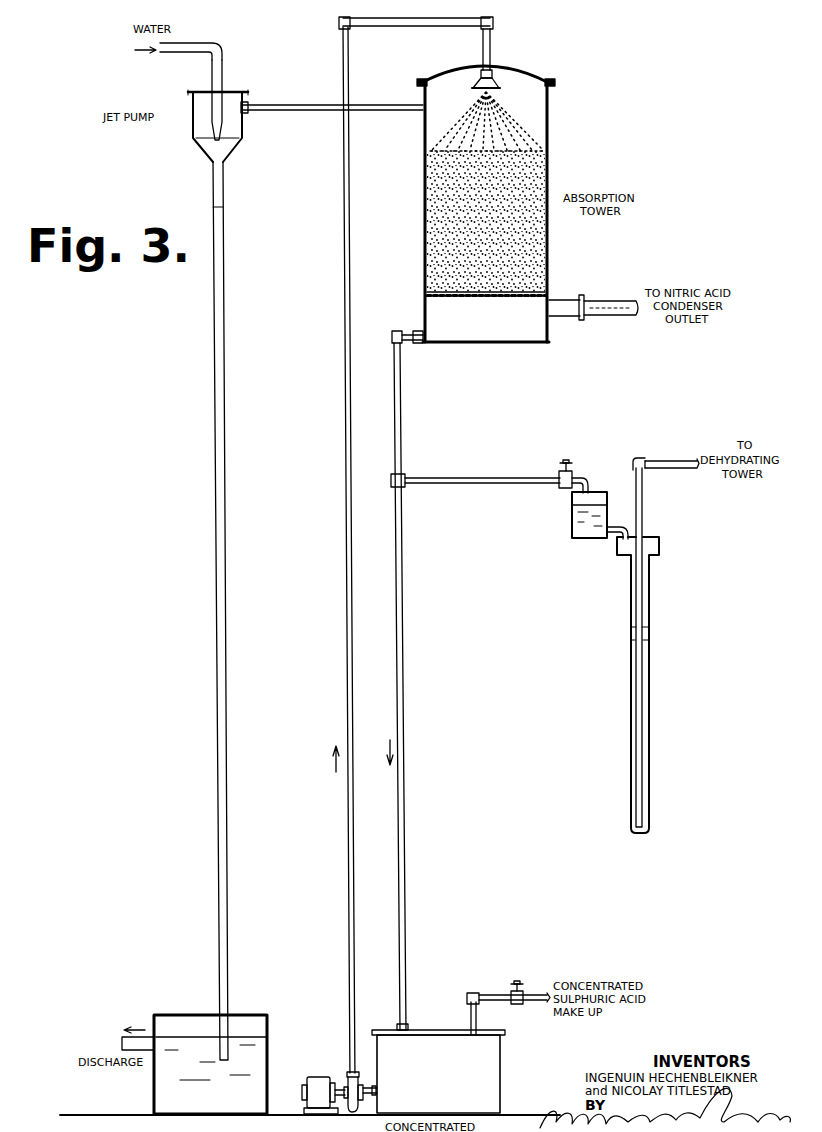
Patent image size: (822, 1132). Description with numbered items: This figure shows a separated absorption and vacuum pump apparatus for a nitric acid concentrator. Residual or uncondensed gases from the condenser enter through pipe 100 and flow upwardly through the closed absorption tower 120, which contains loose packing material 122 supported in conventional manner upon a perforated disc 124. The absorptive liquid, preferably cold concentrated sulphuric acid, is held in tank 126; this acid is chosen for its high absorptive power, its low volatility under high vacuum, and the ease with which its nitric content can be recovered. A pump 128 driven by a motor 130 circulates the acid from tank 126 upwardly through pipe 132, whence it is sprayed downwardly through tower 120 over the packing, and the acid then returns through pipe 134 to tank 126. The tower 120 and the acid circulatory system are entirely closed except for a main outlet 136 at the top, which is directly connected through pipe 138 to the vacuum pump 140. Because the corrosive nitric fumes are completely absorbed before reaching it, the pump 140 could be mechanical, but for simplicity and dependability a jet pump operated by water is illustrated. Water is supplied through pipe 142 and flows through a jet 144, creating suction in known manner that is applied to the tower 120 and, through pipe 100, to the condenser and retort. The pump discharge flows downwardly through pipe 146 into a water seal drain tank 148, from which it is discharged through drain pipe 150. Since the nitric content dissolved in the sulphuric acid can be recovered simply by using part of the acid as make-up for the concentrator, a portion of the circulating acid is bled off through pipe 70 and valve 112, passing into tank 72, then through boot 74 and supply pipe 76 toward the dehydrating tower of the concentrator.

The pipe 70 is at (498, 476).
The tank 72 is at (587, 530).
The boot 74 is at (650, 672).
The supply pipe 76 is at (644, 503).
The pipe 100 is at (608, 300).
The valve 112 is at (565, 461).
The absorption tower 120 is at (550, 125).
The packing material 122 is at (440, 228).
The perforated disc 124 is at (495, 297).
The tank 126 is at (490, 1075).
The pump 128 is at (347, 1077).
The motor 130 is at (316, 1085).
The pipe 132 is at (345, 578).
The pipe 134 is at (404, 584).
The main outlet 136 is at (421, 112).
The pipe 138 is at (287, 104).
The vacuum pump 140 is at (233, 92).
The pipe 142 is at (208, 47).
The jet 144 is at (218, 128).
The pipe 146 is at (217, 746).
The water seal drain tank 148 is at (270, 1025).
The drain pipe 150 is at (143, 1040).